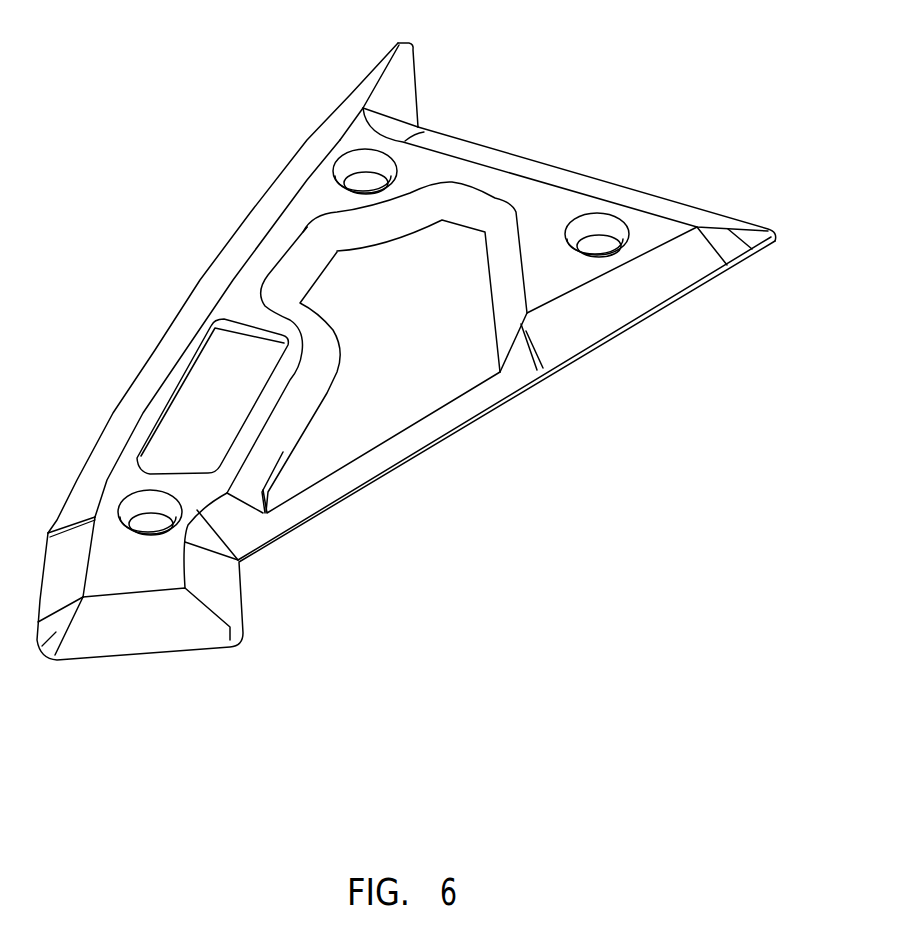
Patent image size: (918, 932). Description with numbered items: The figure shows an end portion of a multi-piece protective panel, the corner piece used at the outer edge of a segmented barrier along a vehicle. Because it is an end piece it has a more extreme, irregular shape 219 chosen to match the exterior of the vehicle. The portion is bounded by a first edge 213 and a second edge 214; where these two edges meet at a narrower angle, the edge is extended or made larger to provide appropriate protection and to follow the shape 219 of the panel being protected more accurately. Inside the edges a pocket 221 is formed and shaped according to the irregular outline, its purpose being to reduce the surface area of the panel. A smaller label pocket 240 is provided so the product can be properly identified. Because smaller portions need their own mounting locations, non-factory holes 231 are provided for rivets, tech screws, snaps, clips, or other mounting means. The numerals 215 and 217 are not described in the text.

The first edge 213 is at (273, 180).
The second edge 214 is at (639, 325).
The lower rim 215 is at (393, 460).
The top surface band 217 is at (268, 255).
The shape 219 is at (417, 67).
The pocket 221 is at (423, 361).
The non-factory hole 231 is at (603, 230).
The label pocket 240 is at (231, 414).